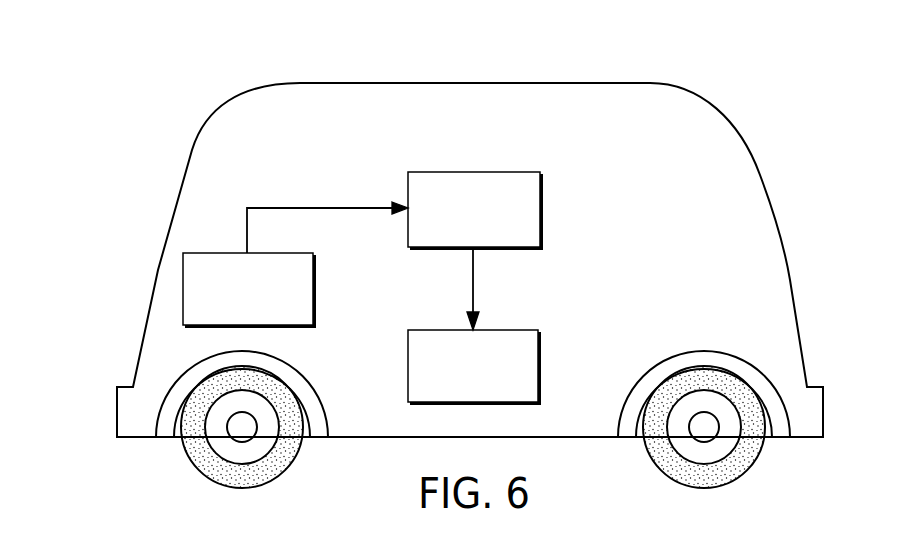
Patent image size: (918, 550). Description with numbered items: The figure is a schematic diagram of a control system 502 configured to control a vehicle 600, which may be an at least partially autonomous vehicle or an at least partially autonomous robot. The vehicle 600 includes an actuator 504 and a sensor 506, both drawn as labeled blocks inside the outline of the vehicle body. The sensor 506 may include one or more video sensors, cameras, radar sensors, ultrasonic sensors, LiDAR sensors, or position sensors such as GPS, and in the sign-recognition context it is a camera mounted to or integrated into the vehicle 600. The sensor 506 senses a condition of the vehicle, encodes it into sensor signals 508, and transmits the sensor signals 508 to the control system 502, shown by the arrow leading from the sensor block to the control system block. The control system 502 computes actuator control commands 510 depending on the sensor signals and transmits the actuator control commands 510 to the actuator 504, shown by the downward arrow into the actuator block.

The vehicle 600 is at (128, 36).
The control system 502 is at (473, 171).
The actuator 504 is at (407, 365).
The sensor 506 is at (316, 290).
The sensor signals 508 is at (327, 206).
The actuator control commands 510 is at (472, 275).